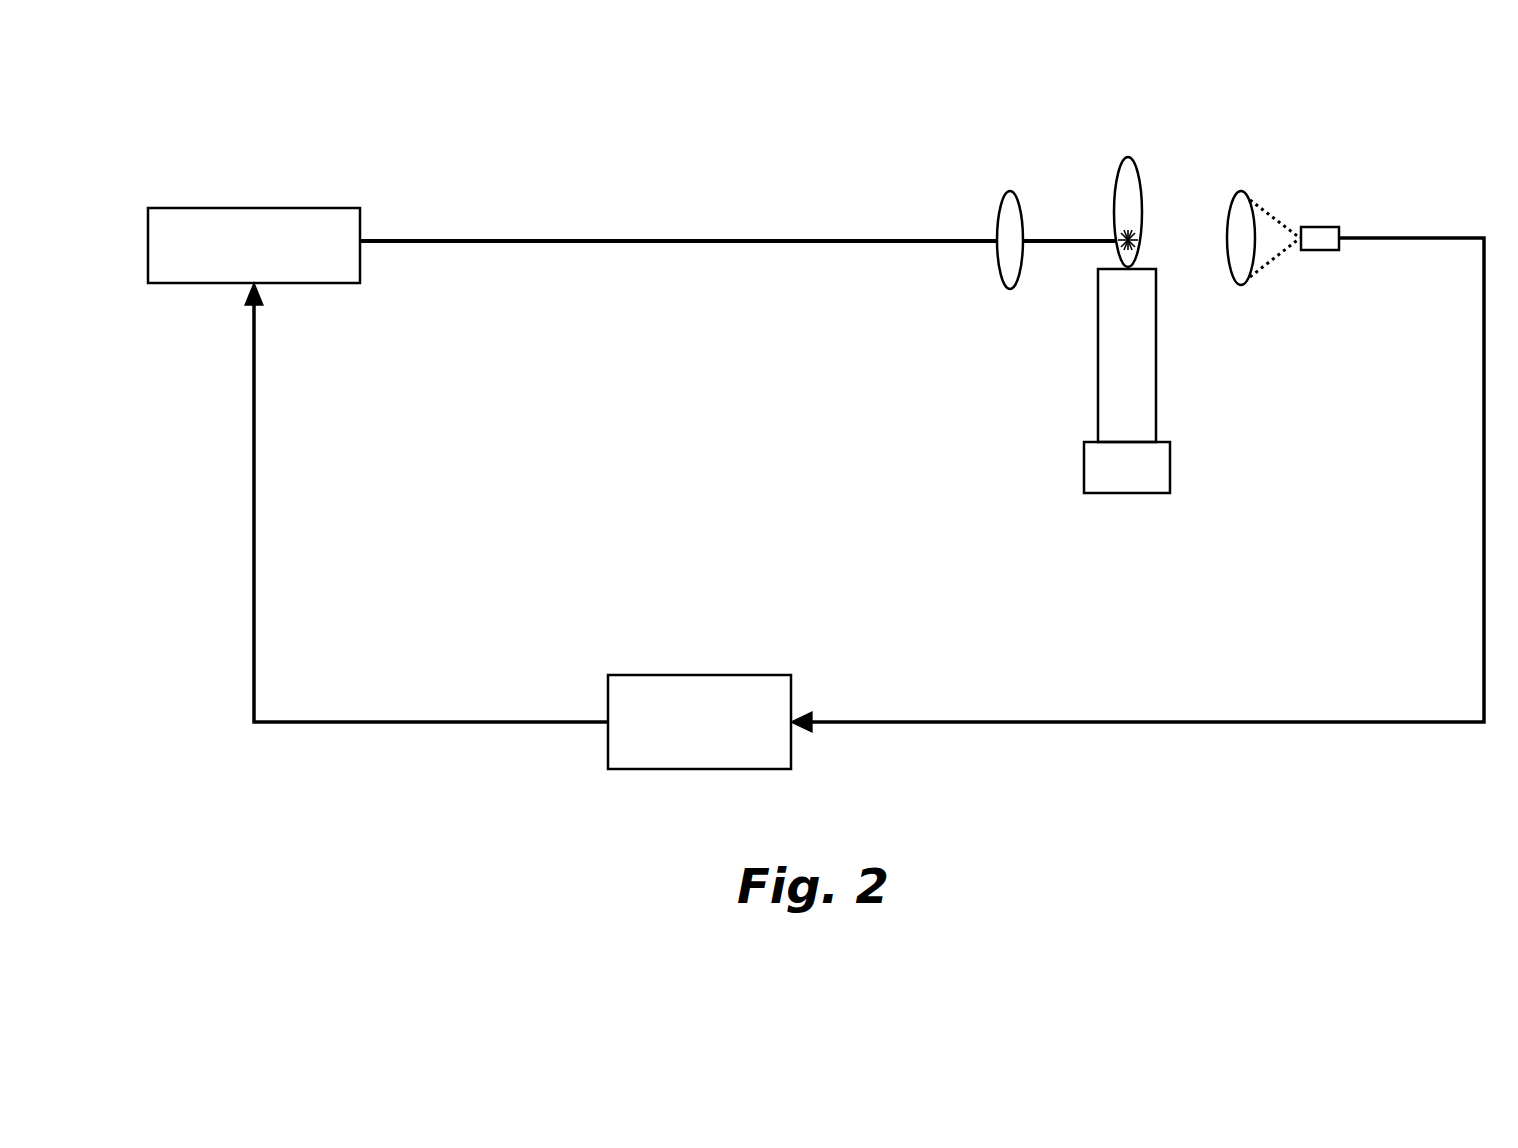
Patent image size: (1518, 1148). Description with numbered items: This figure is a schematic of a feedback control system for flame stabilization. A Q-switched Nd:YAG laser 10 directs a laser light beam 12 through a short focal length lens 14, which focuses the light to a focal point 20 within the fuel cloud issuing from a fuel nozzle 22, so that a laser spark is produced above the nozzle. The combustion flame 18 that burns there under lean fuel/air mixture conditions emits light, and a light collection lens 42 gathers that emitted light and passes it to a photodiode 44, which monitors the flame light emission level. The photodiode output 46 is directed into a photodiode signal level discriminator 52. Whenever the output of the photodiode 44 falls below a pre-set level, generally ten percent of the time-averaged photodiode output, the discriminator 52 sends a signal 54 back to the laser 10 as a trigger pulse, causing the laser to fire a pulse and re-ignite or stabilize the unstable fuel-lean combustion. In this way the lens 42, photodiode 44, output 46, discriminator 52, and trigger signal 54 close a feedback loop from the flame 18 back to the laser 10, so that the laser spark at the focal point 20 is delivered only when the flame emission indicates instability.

The laser 10 is at (272, 259).
The laser light beam 12 is at (690, 240).
The short focal length lens 14 is at (998, 206).
The combustion flame 18 is at (1138, 173).
The focal point 20 is at (1140, 238).
The fuel nozzle 22 is at (1145, 369).
The light collection lens 42 is at (1243, 193).
The photodiode 44 is at (1318, 250).
The photodiode output 46 is at (1483, 447).
The photodiode signal level discriminator 52 is at (717, 738).
The signal 54 is at (254, 500).